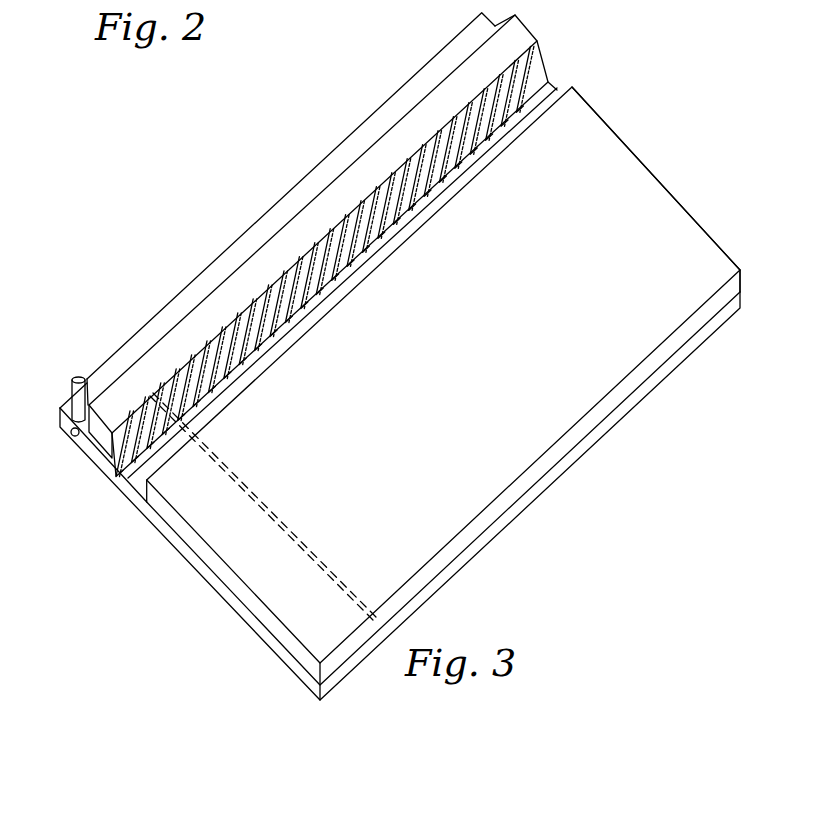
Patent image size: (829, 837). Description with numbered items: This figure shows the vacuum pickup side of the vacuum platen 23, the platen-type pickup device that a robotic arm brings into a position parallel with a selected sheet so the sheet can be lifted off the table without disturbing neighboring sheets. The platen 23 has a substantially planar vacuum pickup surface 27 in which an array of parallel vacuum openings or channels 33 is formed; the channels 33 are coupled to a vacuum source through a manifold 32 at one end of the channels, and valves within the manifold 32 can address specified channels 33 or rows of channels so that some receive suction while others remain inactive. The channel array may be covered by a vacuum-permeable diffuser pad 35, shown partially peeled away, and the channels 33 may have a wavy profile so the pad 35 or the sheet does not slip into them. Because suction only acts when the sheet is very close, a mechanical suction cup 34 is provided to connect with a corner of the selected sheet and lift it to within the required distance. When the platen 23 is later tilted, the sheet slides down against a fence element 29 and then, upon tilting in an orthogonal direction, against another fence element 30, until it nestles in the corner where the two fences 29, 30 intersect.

The vacuum platen 23 is at (557, 88).
The vacuum pickup surface 27 is at (312, 168).
The fence element 29 is at (540, 498).
The fence element 30 is at (161, 537).
The manifold 32 is at (518, 32).
The vacuum channels 33 is at (224, 408).
The mechanical suction cup 34 is at (72, 378).
The vacuum-permeable diffuser pad 35 is at (670, 194).